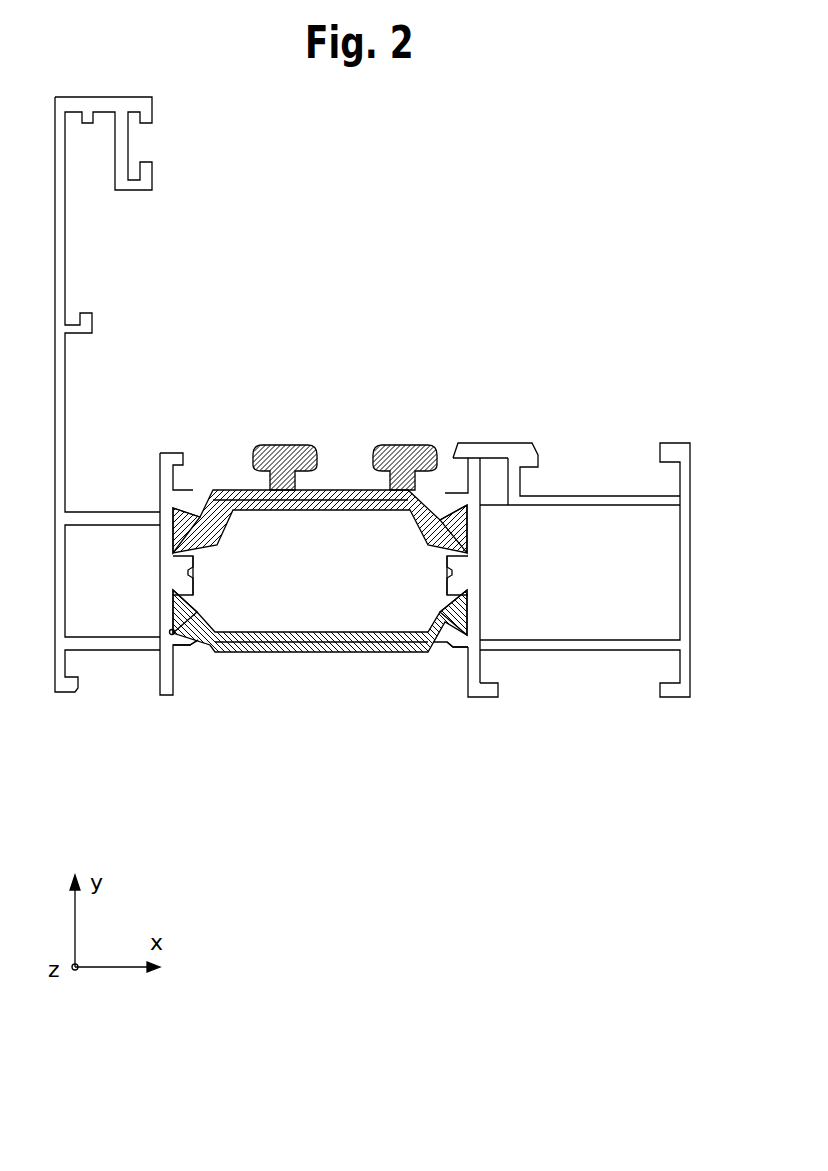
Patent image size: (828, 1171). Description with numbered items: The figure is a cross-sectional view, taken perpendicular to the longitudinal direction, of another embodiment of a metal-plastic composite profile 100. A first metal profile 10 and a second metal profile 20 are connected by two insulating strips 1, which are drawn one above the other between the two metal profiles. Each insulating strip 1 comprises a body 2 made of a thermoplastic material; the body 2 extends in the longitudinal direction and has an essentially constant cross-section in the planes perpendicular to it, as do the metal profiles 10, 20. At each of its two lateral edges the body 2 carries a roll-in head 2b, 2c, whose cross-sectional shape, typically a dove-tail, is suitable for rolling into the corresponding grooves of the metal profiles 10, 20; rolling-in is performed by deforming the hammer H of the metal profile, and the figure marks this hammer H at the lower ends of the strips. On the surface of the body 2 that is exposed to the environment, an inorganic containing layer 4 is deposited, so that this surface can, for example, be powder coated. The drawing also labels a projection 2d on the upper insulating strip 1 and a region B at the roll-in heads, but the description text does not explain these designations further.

The metal-plastic composite profile 100 is at (331, 760).
The insulating strip 1 is at (343, 470).
The body 2 is at (305, 530).
The roll-in head 2b is at (172, 600).
The roll-in head 2c is at (470, 600).
The projection (knob) of gasket 2d is at (283, 445).
The inorganic containing layer 4 is at (400, 445).
The first metal profile 10 is at (598, 494).
The second metal profile 20 is at (65, 282).
The bonded region B is at (193, 557).
The hammer H is at (200, 636).